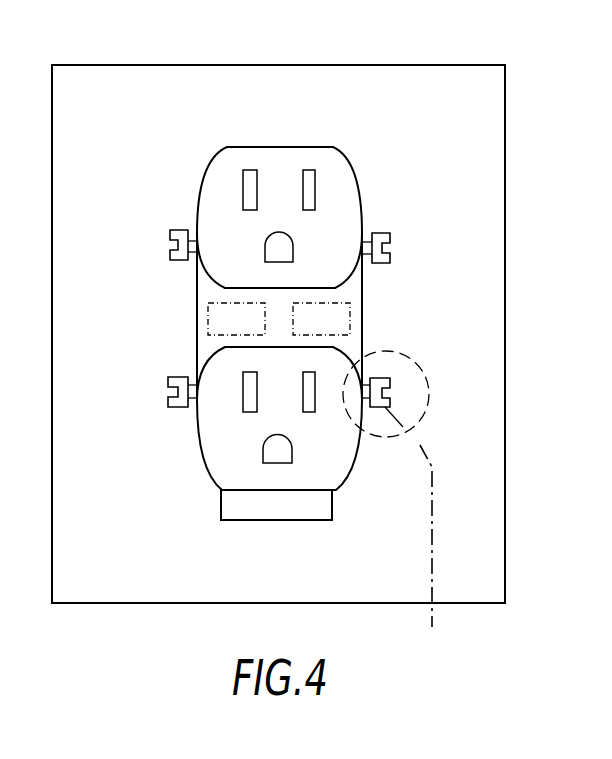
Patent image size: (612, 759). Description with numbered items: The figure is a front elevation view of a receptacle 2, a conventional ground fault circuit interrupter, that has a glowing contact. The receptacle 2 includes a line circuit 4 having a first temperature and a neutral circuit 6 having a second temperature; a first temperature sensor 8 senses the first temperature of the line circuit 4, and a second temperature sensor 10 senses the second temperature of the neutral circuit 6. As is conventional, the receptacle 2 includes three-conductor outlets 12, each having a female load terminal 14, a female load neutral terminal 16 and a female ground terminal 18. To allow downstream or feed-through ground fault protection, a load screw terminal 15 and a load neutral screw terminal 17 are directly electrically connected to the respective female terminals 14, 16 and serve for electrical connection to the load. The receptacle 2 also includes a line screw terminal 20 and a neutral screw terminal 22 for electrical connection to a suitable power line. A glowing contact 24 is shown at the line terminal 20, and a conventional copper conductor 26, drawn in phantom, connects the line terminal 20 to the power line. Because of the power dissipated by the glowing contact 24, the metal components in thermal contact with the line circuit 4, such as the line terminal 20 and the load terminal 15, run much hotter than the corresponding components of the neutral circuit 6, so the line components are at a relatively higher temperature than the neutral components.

The receptacle 2 is at (410, 66).
The line circuit 4 is at (385, 180).
The neutral circuit 6 is at (175, 176).
The first temperature sensor 8 is at (350, 328).
The second temperature sensor 10 is at (208, 327).
The three-conductor outlet 12 is at (282, 160).
The female load terminal 14 is at (310, 212).
The load screw terminal 15 is at (385, 233).
The female load neutral terminal 16 is at (250, 212).
The load neutral screw terminal 17 is at (174, 265).
The female ground terminal 18 is at (266, 251).
The line screw terminal 20 is at (376, 409).
The neutral screw terminal 22 is at (175, 408).
The glowing contact 24 is at (430, 360).
The copper conductor 26 is at (430, 548).